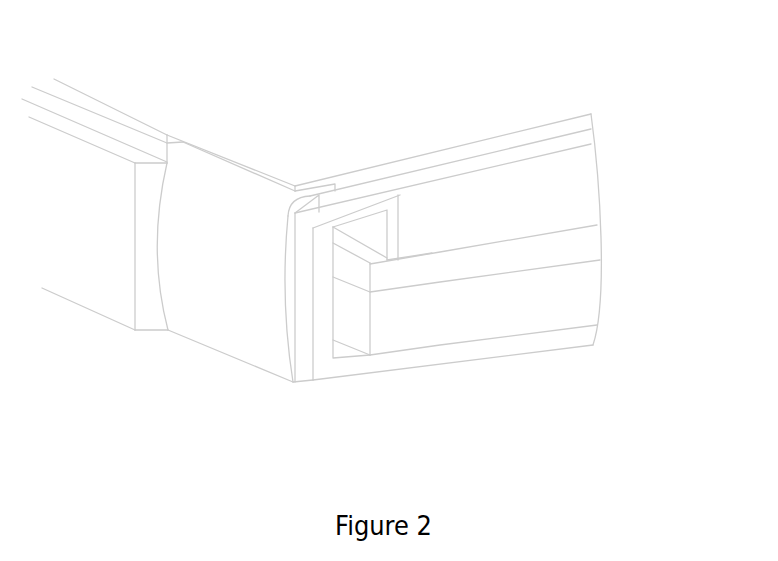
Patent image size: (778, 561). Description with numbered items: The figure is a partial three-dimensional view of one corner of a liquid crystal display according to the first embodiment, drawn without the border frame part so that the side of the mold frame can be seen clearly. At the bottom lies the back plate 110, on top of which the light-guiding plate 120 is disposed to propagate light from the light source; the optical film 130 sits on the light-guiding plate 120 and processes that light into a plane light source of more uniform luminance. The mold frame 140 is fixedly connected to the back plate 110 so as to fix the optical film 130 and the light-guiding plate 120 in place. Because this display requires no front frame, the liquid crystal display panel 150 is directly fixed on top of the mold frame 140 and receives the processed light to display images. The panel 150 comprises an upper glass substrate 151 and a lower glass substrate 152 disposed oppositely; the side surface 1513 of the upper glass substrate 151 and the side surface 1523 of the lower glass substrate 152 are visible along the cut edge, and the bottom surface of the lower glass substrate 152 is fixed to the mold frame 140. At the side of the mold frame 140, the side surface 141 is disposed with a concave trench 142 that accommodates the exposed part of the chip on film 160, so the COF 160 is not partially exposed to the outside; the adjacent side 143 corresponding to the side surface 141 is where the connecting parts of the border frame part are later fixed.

The back plate 110 is at (415, 360).
The light-guiding plate 120 is at (557, 297).
The optical film 130 is at (553, 245).
The mold frame 140 is at (302, 323).
The side surface 141 is at (92, 235).
The concave trench 142 is at (163, 333).
The side 143 is at (108, 145).
The liquid crystal display panel 150 is at (378, 114).
The upper glass substrate 151 is at (364, 116).
The lower glass substrate 152 is at (359, 114).
The side surface 1513 is at (116, 115).
The side surface 1523 is at (63, 110).
The chip on film 160 is at (232, 285).